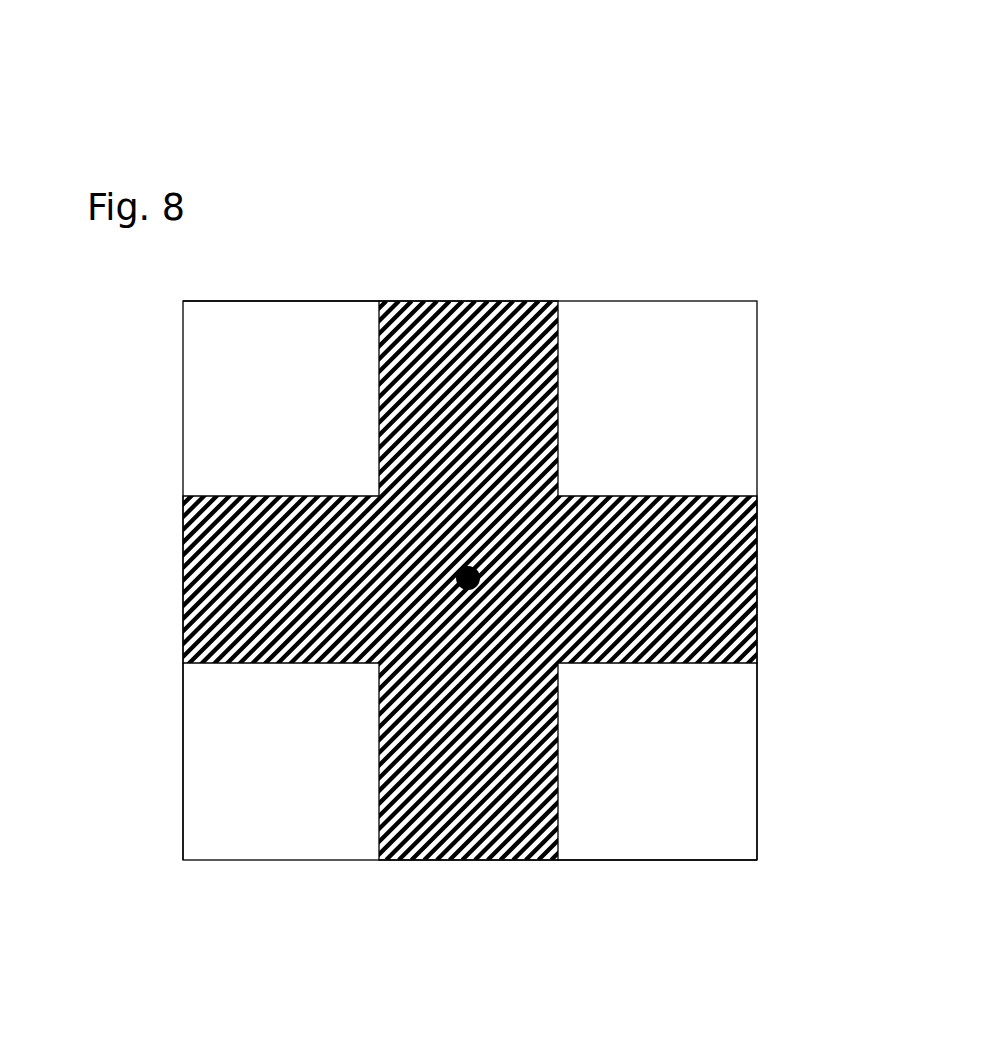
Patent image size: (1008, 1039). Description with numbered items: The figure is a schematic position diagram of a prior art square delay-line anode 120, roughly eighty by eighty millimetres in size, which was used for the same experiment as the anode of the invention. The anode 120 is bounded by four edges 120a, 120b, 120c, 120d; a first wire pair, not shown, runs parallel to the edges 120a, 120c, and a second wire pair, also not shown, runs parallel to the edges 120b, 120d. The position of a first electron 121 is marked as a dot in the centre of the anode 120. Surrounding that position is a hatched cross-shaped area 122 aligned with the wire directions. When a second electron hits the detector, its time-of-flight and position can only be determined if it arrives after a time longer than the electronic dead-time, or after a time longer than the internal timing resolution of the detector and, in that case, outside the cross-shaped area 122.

The square delay-line anode 120 is at (487, 193).
The edge of the anode 120a is at (755, 735).
The edge of the anode 120b is at (630, 860).
The edge of the anode 120c is at (183, 760).
The edge of the anode 120d is at (265, 300).
The first electron 121 is at (470, 566).
The cross-shaped area 122 is at (452, 370).